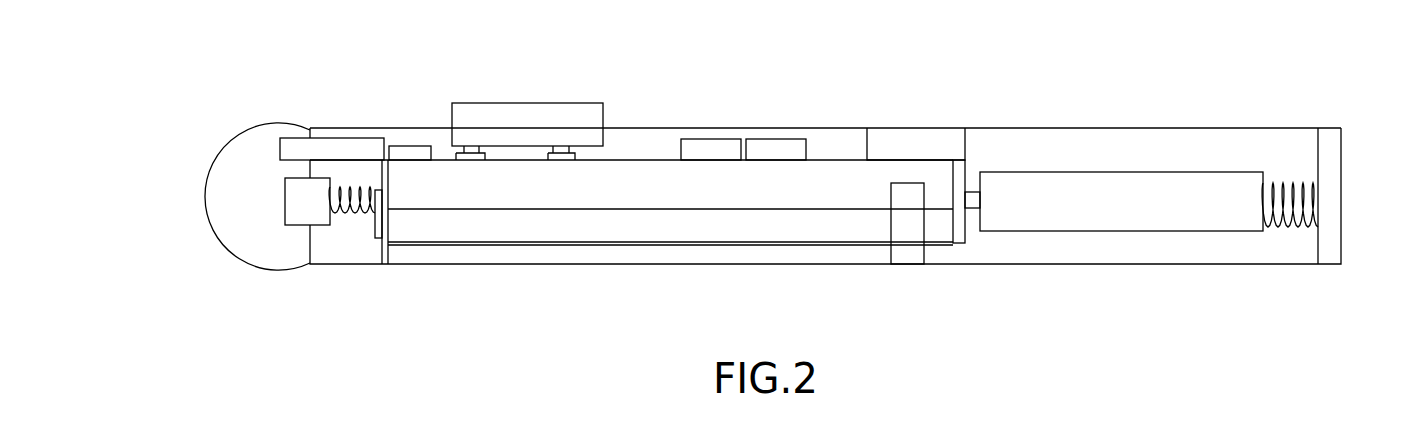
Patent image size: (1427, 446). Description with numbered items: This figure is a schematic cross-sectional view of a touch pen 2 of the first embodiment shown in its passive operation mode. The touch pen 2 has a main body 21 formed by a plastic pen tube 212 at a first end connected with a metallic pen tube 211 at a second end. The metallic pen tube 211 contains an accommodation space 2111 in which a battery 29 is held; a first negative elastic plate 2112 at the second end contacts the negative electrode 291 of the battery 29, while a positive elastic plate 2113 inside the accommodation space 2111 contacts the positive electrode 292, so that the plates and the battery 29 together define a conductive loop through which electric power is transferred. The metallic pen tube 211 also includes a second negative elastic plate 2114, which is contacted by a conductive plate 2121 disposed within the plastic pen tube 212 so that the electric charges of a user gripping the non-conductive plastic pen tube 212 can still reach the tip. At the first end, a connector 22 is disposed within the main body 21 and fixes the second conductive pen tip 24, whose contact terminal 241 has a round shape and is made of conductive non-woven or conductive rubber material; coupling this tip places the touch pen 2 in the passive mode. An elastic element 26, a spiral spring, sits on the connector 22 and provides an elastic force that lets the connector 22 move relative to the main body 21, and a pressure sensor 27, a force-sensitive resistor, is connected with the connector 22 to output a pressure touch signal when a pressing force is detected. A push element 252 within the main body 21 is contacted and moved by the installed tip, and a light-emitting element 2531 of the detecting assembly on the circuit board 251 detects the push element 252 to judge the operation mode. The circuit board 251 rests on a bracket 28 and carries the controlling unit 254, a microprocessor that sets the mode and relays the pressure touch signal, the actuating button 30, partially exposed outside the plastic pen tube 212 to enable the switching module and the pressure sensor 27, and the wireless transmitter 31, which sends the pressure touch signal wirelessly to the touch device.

The touch pen 2 is at (1100, 52).
The main body 21 is at (1279, 42).
The metallic pen tube 211 is at (1137, 265).
The accommodation space 2111 is at (1107, 145).
The first negative elastic plate 2112 is at (1305, 187).
The positive elastic plate 2113 is at (960, 233).
The second negative elastic plate 2114 is at (903, 257).
The plastic pen tube 212 is at (812, 265).
The conductive plate 2121 is at (703, 253).
The connector 22 is at (303, 197).
The second conductive pen tip 24 is at (230, 222).
The contact terminal 241 is at (205, 190).
The circuit board 251 is at (825, 178).
The push element 252 is at (332, 148).
The light-emitting element 2531 is at (410, 155).
The controlling unit 254 is at (713, 143).
The elastic element 26 is at (328, 202).
The pressure sensor 27 is at (377, 230).
The bracket 28 is at (507, 230).
The battery 29 is at (1150, 190).
The negative electrode 291 is at (1265, 222).
The positive electrode 292 is at (968, 192).
The actuating button 30 is at (580, 115).
The wireless transmitter 31 is at (775, 143).